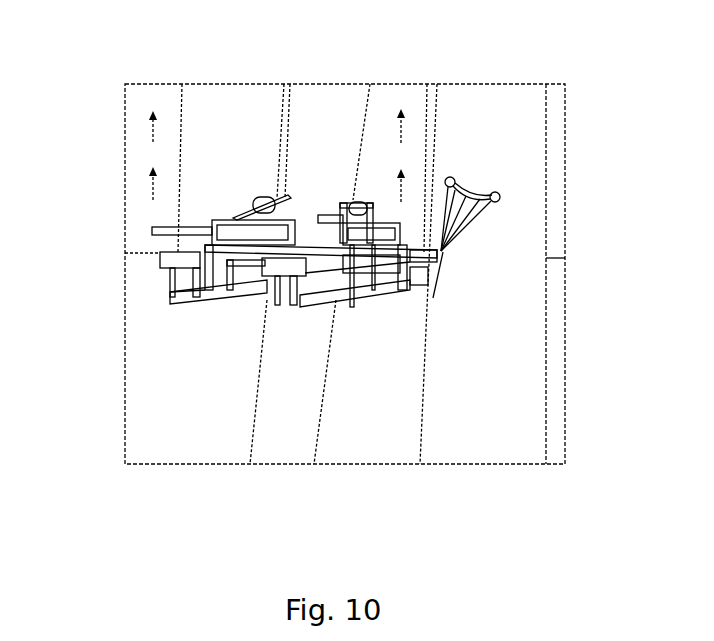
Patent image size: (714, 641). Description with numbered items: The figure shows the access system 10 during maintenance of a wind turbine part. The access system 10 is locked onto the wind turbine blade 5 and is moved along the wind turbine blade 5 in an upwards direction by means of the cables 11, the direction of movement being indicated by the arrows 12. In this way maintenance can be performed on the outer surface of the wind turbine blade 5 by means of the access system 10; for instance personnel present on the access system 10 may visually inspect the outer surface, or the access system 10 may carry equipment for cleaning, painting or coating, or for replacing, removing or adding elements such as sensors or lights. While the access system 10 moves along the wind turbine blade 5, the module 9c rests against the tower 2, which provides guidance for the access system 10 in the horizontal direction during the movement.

The tower 2 is at (500, 390).
The wind turbine blade 5 is at (283, 423).
The cables 11 is at (183, 123).
The arrows 12 is at (151, 124).
The module 9c is at (453, 228).
The access system 10 is at (228, 298).